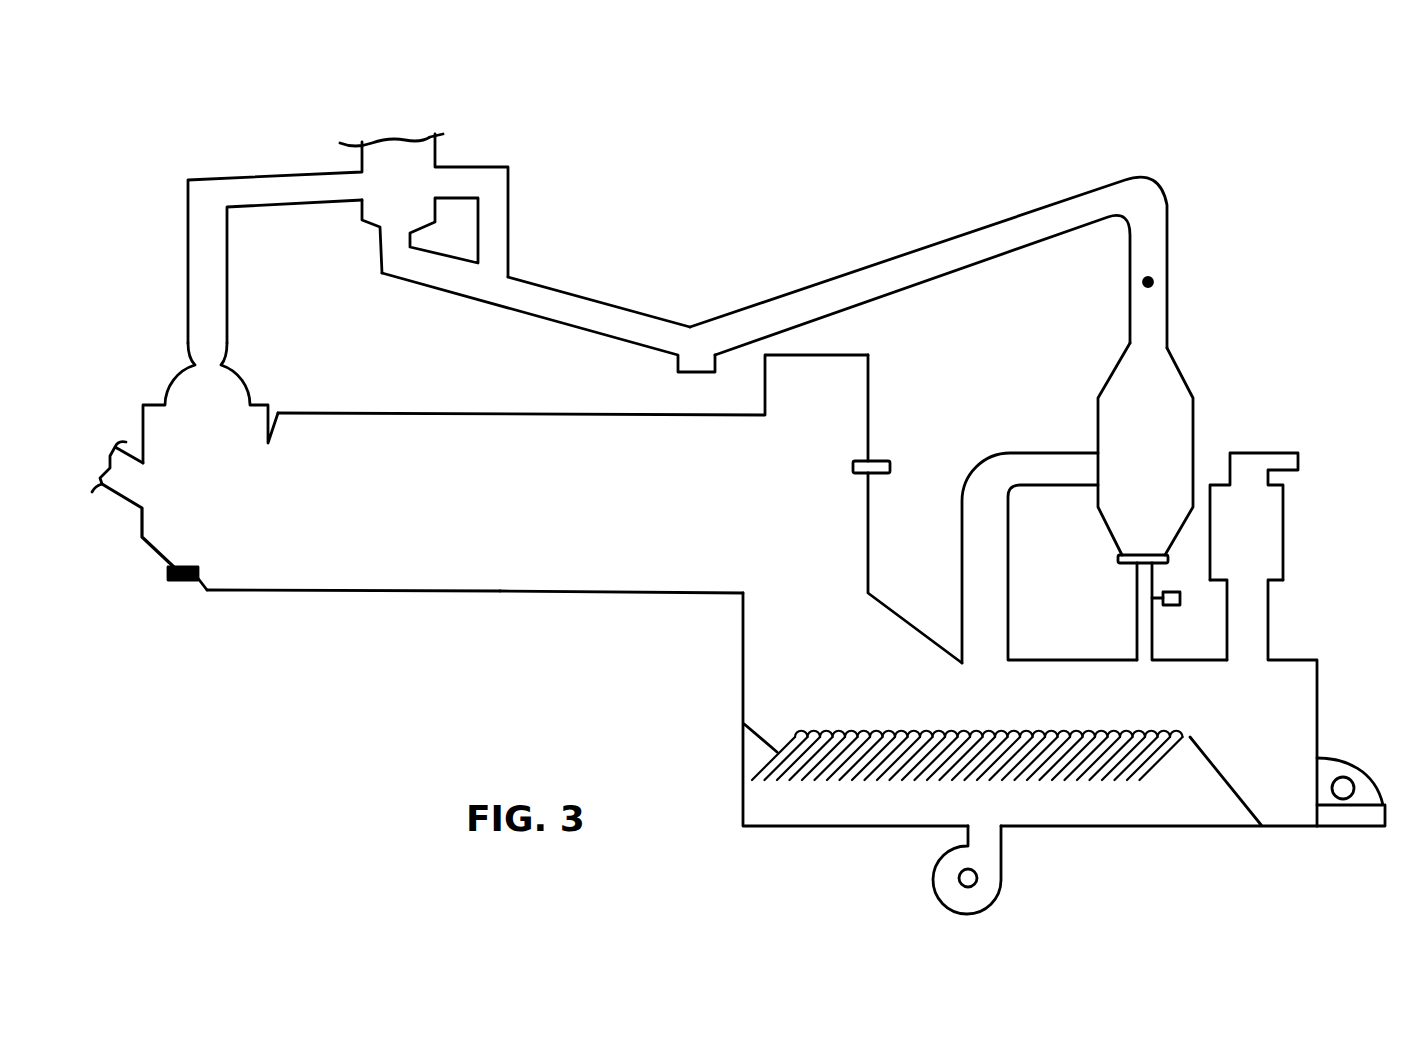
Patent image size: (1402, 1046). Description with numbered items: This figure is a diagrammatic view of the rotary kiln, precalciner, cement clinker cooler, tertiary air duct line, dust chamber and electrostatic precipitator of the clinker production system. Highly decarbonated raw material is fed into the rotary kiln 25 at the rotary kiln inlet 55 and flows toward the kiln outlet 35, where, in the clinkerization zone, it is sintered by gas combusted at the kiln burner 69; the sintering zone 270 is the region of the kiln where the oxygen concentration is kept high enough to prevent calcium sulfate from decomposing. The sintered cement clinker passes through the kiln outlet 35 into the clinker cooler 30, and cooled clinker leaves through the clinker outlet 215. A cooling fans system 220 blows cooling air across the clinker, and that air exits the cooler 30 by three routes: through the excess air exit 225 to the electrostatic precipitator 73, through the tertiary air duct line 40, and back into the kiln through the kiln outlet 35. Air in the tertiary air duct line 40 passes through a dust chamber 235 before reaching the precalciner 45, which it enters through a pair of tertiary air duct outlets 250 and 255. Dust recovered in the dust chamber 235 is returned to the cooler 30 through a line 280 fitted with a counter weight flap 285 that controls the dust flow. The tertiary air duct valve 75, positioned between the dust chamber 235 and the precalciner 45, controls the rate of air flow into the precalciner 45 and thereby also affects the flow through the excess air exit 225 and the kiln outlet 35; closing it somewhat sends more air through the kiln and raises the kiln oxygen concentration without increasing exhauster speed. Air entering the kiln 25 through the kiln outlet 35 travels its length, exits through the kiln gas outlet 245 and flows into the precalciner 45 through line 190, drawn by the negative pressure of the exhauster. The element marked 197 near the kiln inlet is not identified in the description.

The rotary kiln 25 is at (365, 593).
The clinker cooler 30 is at (742, 758).
The kiln outlet 35 is at (742, 608).
The tertiary air duct line 40 is at (1008, 617).
The precalciner 45 is at (363, 223).
The rotary kiln inlet 55 is at (123, 503).
The kiln burner 69 is at (882, 461).
The electrostatic precipitator 73 is at (1287, 510).
The tertiary air duct valve 75 is at (1132, 288).
The line 190 is at (263, 176).
The seal 197 is at (178, 583).
The clinker outlet 215 is at (1280, 827).
The cooling fans system 220 is at (995, 890).
The excess air exit 225 is at (1268, 607).
The dust chamber 235 is at (1197, 417).
The kiln gas outlet 245 is at (242, 378).
The tertiary air duct outlet 250 is at (380, 273).
The tertiary air duct outlet 255 is at (508, 182).
The sintering zone 270 is at (662, 595).
The line 280 is at (1155, 640).
The counter weight flap 285 is at (1182, 600).